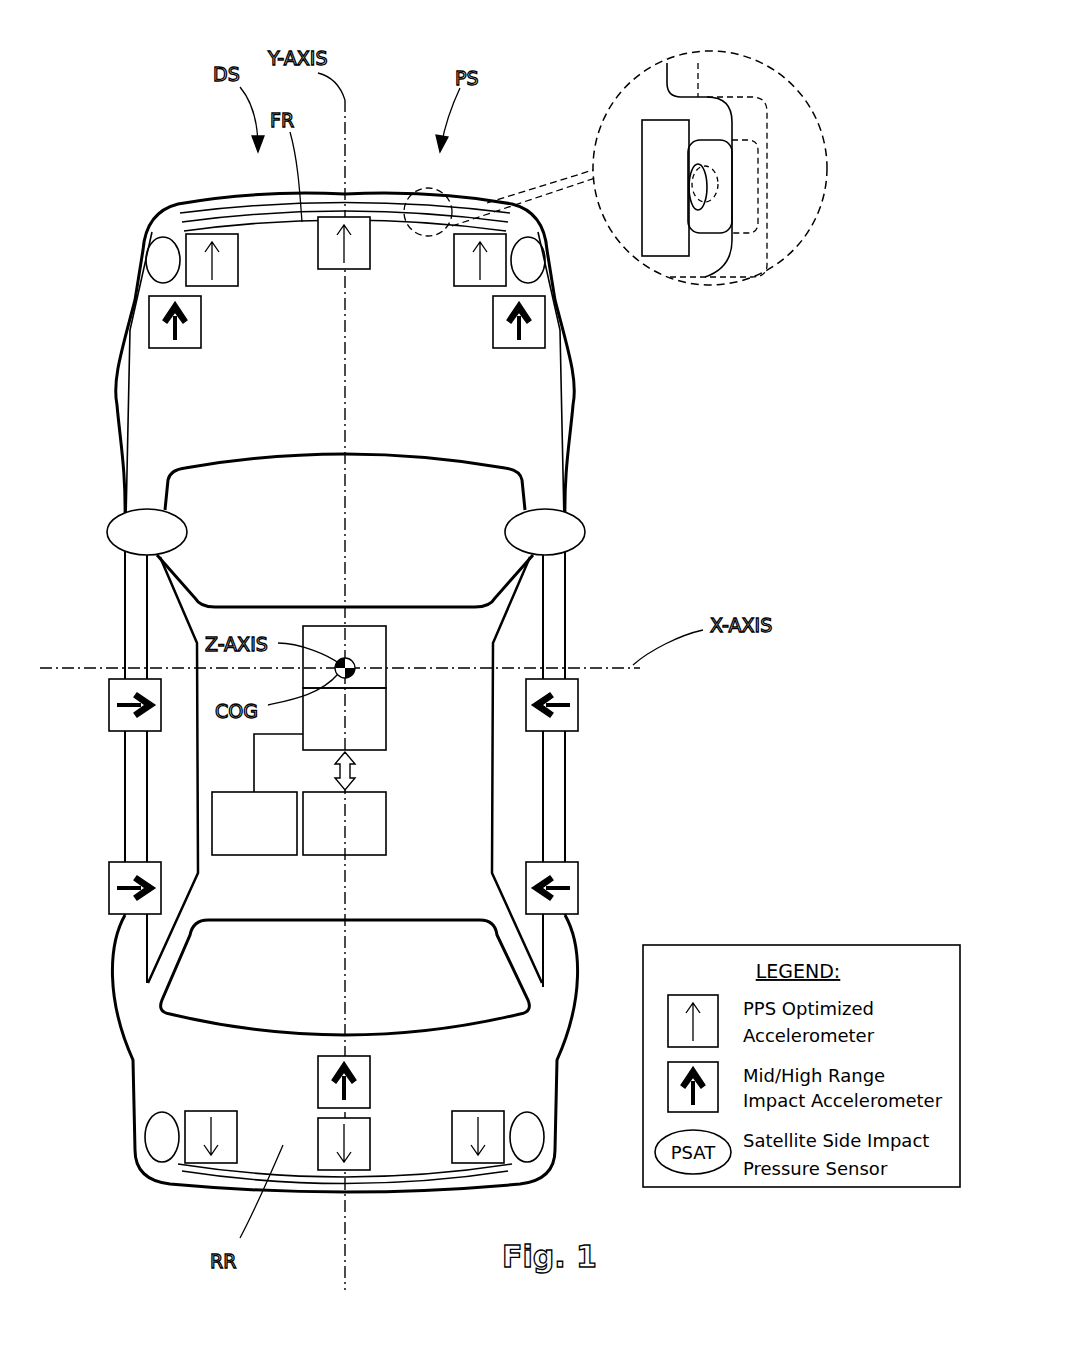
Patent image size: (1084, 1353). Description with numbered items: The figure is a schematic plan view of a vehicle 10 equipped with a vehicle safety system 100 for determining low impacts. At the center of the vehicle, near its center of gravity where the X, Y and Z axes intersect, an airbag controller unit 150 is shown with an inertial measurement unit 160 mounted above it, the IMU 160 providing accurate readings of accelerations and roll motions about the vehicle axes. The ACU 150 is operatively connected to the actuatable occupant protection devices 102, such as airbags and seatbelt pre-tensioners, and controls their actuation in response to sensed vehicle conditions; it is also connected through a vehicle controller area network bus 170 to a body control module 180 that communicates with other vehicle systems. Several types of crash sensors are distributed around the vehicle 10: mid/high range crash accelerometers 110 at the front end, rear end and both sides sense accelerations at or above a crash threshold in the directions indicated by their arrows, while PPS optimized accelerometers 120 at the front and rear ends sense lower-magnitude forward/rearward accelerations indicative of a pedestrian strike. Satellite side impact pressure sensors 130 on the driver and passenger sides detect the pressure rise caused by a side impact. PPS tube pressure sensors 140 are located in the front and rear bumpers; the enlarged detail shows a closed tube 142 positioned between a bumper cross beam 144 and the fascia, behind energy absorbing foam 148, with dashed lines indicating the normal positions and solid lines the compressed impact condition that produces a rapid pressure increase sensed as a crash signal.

The vehicle 10 is at (139, 189).
The vehicle safety system 100 is at (229, 166).
The actuatable vehicle occupant protection devices 102 is at (243, 845).
The mid/high range crash accelerometers 110 is at (188, 335).
The PPS optimized accelerometers 120 is at (223, 277).
The satellite side impact pressure sensors 130 is at (140, 510).
The PPS tube pressure sensors 140 is at (212, 212).
The closed tube 142 is at (697, 210).
The bumper cross beam 144 is at (713, 113).
The energy absorbing foam 148 is at (720, 220).
The airbag controller unit 150 is at (362, 700).
The inertial measurement unit 160 is at (378, 642).
The vehicle controller area network bus 170 is at (345, 773).
The vehicle body control module 180 is at (368, 802).